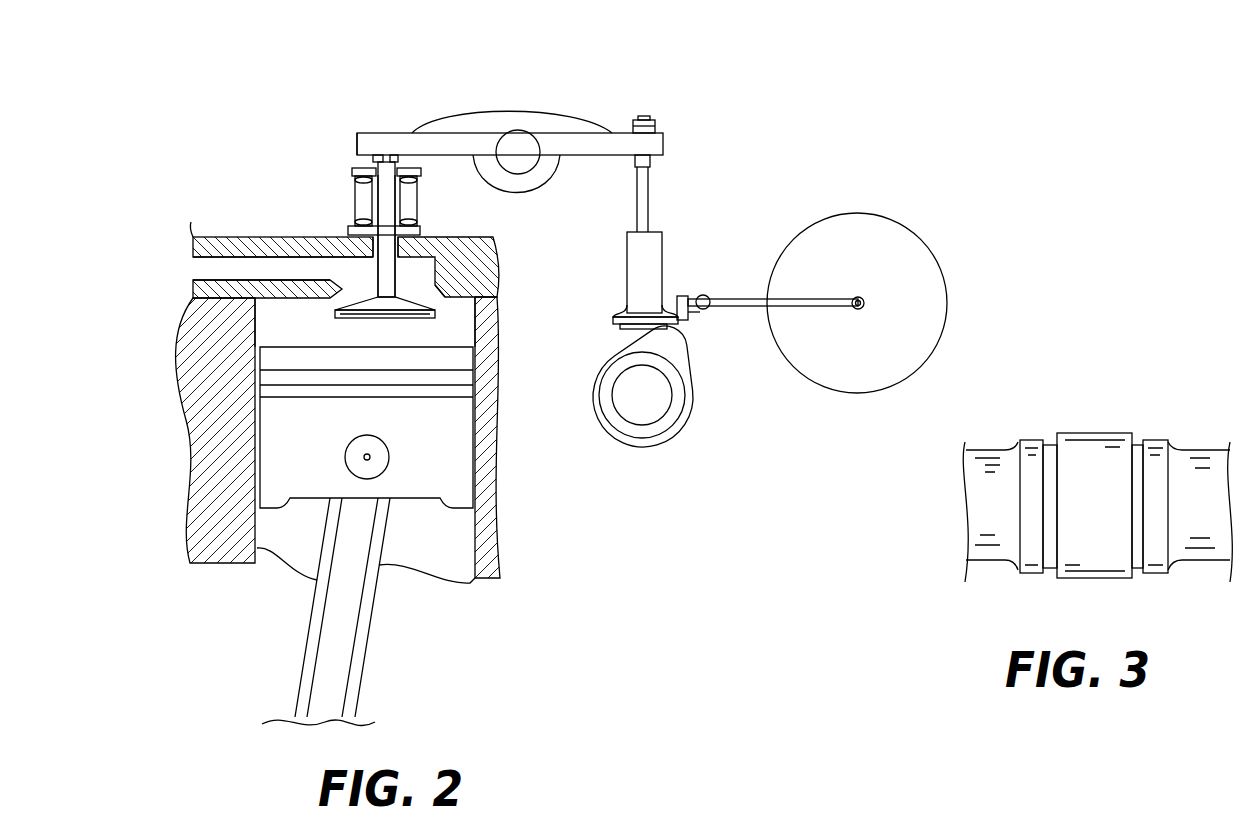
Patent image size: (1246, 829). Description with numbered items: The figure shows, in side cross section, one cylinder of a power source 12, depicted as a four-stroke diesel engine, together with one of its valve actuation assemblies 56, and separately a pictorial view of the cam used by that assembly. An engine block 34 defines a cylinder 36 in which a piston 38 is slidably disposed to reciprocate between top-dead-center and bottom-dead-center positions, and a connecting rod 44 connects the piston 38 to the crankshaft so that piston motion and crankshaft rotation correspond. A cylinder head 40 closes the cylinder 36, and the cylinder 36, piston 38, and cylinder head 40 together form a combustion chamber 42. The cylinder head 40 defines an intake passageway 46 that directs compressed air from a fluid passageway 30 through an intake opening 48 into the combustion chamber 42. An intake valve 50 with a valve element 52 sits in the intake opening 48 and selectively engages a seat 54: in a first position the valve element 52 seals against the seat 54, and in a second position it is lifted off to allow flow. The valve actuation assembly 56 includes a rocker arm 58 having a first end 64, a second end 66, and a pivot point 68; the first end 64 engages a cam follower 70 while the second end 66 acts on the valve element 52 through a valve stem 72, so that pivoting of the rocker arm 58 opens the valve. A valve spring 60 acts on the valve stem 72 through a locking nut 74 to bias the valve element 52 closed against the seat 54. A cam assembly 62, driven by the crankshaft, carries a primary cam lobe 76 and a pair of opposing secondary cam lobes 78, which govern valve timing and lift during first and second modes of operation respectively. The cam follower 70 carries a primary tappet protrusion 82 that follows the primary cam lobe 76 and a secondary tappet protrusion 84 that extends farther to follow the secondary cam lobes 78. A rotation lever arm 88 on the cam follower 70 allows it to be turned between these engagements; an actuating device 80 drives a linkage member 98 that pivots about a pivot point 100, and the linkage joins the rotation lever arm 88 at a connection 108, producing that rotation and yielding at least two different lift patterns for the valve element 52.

In FIG. 2, the power source 12 is at (543, 518).
In FIG. 2, the fluid passageway 30 is at (190, 267).
In FIG. 2, the engine block 34 is at (198, 400).
In FIG. 2, the cylinder 36 is at (258, 550).
In FIG. 2, the piston 38 is at (366, 427).
In FIG. 2, the cylinder head 40 is at (490, 255).
In FIG. 2, the combustion chamber 42 is at (365, 322).
In FIG. 2, the connecting rod 44 is at (352, 622).
In FIG. 2, the intake passageway 46 is at (245, 268).
In FIG. 2, the intake opening 48 is at (432, 297).
In FIG. 2, the intake valve 50 is at (414, 325).
In FIG. 2, the valve element 52 is at (350, 318).
In FIG. 2, the seat 54 is at (334, 285).
In FIG. 2, the valve actuation assembly 56 is at (716, 82).
In FIG. 2, the rocker arm 58 is at (440, 112).
In FIG. 2, the valve spring 60 is at (354, 198).
In FIG. 2, the cam assembly 62 is at (642, 395).
In FIG. 3, the cam assembly 62 is at (968, 608).
In FIG. 2, the first end 64 is at (664, 148).
In FIG. 2, the second end 66 is at (383, 133).
In FIG. 2, the pivot point 68 is at (518, 152).
In FIG. 2, the cam follower 70 is at (667, 228).
In FIG. 2, the valve stem 72 is at (397, 198).
In FIG. 2, the locking nut 74 is at (352, 170).
In FIG. 2, the primary cam lobe 76 is at (688, 350).
In FIG. 3, the primary cam lobe 76 is at (1093, 433).
In FIG. 2, the secondary cam lobe 78 is at (688, 398).
In FIG. 3, the secondary cam lobe 78 is at (1027, 440).
In FIG. 2, the actuating device 80 is at (921, 221).
In FIG. 2, the primary tappet protrusion 82 is at (614, 322).
In FIG. 2, the secondary tappet protrusion 84 is at (640, 330).
In FIG. 2, the rotation lever arm 88 is at (692, 315).
In FIG. 2, the linkage member 98 is at (742, 298).
In FIG. 2, the pivot point 100 is at (768, 306).
In FIG. 2, the pin 108 is at (703, 294).